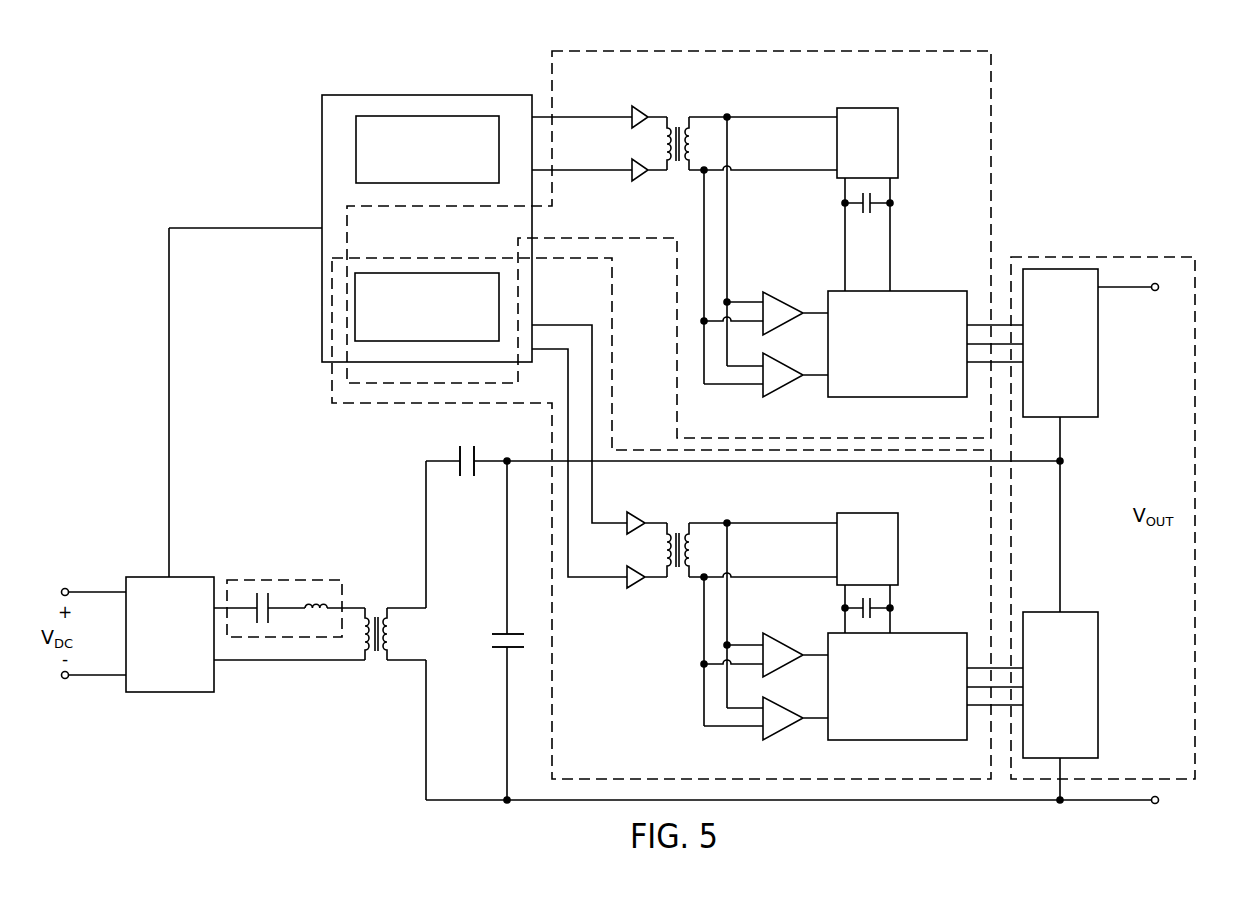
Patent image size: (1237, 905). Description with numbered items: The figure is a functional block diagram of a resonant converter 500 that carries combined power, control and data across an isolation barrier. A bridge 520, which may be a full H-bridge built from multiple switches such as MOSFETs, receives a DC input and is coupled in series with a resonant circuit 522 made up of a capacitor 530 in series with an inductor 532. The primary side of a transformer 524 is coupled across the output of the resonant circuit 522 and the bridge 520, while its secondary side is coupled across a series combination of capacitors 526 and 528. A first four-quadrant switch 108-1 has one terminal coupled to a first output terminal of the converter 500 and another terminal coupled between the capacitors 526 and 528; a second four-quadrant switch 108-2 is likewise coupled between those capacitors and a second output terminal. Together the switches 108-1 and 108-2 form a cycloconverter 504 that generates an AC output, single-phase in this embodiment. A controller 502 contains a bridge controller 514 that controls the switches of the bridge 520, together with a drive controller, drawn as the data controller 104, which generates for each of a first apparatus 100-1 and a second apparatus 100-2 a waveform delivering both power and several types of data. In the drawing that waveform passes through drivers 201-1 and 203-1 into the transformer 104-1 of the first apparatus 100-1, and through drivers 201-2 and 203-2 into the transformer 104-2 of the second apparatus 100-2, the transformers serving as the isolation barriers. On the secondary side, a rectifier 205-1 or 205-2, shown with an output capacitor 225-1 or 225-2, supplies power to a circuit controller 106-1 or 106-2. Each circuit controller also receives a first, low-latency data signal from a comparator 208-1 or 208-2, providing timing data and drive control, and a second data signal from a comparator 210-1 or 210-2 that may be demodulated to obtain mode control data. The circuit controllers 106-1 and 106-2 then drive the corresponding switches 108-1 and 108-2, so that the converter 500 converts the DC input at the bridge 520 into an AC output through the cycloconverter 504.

The resonant converter 500 is at (1180, 133).
The controller 502 is at (322, 186).
The bridge controller 514 is at (356, 134).
The data controller 104 is at (355, 288).
The first apparatus 100-1 is at (991, 84).
The second apparatus 100-2 is at (552, 727).
The first buffer 201-1 is at (641, 105).
The second buffer 203-1 is at (641, 182).
The first buffer 201-2 is at (641, 511).
The second buffer 203-2 is at (641, 589).
The transformer 104-1 is at (679, 114).
The transformer 104-2 is at (679, 520).
The rectifier 205-1 is at (898, 130).
The rectifier 205-2 is at (898, 535).
The capacitor 225-1 is at (881, 204).
The capacitor 225-2 is at (881, 609).
The comparator 208-1 is at (786, 292).
The comparator 210-1 is at (789, 386).
The comparator 208-2 is at (786, 634).
The comparator 210-2 is at (789, 729).
The circuit controller 106-1 is at (930, 290).
The circuit controller 106-2 is at (876, 725).
The cycloconverter 504 is at (1150, 256).
The first 4Q switch 108-1 is at (1098, 397).
The second 4Q switch 108-2 is at (1098, 645).
The bridge 520 is at (170, 694).
The resonant circuit 522 is at (281, 640).
The capacitor 530 is at (268, 590).
The inductor 532 is at (316, 590).
The transformer 524 is at (378, 662).
The capacitor 526 is at (468, 475).
The capacitor 528 is at (498, 636).